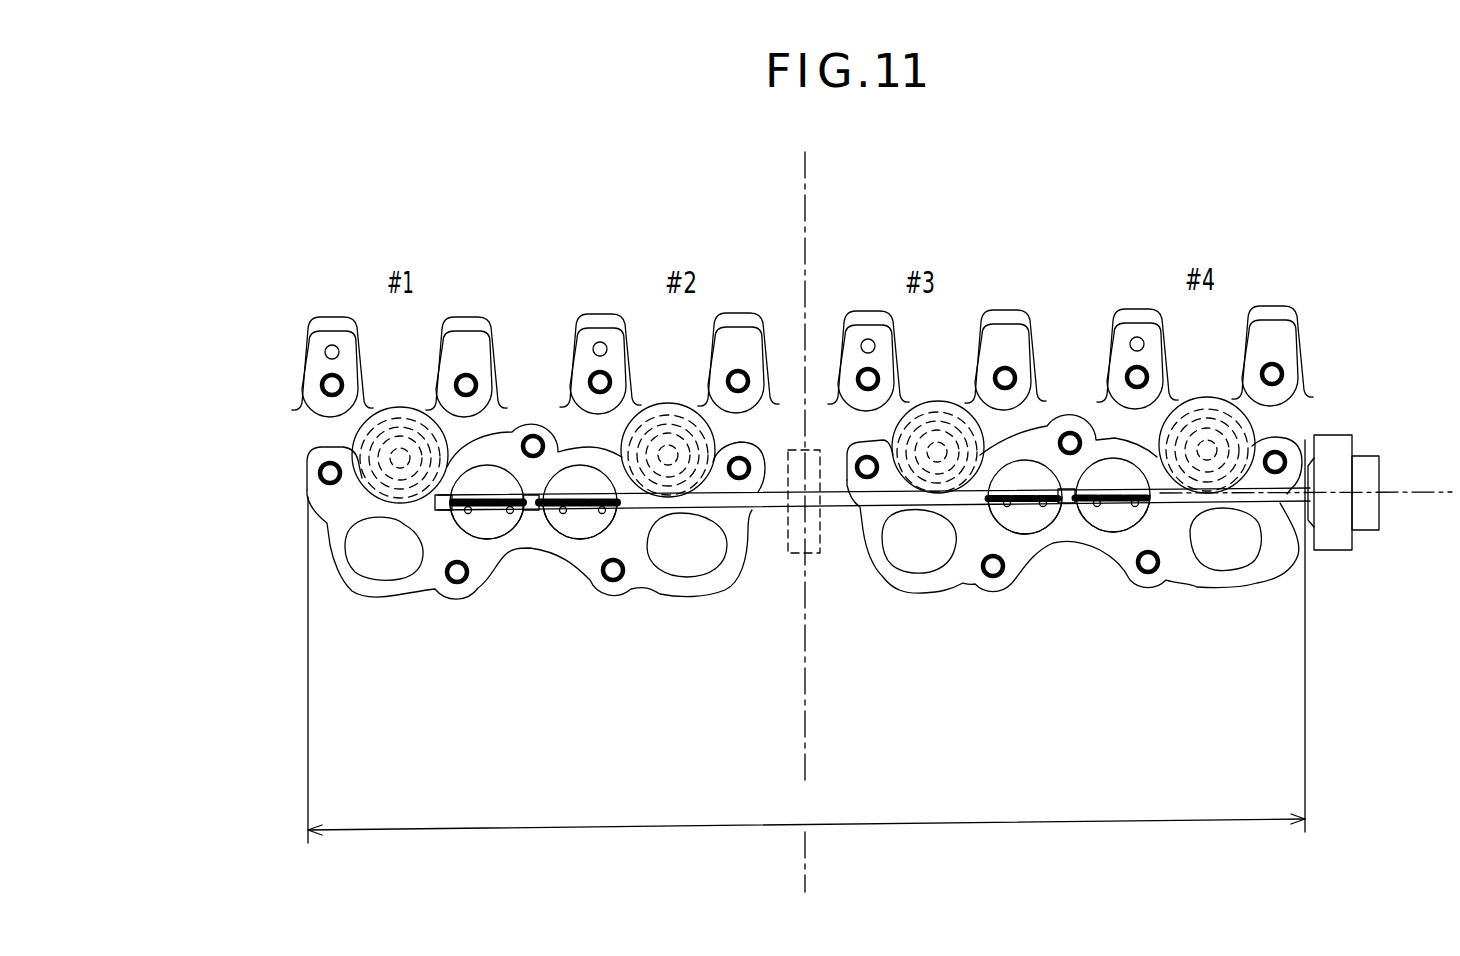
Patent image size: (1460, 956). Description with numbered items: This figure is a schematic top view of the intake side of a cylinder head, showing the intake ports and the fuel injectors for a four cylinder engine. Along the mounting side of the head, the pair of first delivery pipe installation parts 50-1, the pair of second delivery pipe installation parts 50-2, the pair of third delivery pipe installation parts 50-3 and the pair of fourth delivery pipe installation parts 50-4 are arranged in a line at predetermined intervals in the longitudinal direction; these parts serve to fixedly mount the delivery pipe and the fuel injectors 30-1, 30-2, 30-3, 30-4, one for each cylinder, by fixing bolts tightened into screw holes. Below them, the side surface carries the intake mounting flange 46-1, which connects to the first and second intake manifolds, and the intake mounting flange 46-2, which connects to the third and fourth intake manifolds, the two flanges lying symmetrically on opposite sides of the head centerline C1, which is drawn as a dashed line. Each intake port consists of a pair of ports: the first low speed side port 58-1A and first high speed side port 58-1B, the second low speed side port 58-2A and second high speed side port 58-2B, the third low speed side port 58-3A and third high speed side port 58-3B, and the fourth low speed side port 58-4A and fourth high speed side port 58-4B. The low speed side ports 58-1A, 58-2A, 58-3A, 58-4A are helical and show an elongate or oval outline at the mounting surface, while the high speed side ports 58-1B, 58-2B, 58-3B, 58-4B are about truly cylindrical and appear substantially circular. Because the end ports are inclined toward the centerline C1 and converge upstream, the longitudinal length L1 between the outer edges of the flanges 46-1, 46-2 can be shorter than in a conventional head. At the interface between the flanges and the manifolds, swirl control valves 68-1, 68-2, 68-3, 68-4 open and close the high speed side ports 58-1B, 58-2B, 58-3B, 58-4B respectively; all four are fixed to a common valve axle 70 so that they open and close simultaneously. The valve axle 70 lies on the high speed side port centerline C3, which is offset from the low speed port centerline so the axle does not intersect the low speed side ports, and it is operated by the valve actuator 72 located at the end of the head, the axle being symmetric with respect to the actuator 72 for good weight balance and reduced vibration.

The fuel injector 30-1 is at (390, 420).
The fuel injector 30-2 is at (662, 418).
The fuel injector 30-3 is at (935, 418).
The fuel injector 30-4 is at (1200, 412).
The first delivery pipe installation parts 50-1 is at (322, 340).
The second delivery pipe installation parts 50-2 is at (592, 335).
The third delivery pipe installation parts 50-3 is at (860, 340).
The fourth delivery pipe installation parts 50-4 is at (1127, 328).
The intake mounting flange 46-1 is at (1131, 589).
The intake mounting flange 46-2 is at (465, 579).
The first low speed side port 58-1A is at (393, 565).
The first high speed side port 58-1B is at (482, 530).
The second low speed side port 58-2A is at (693, 558).
The second high speed side port 58-2B is at (592, 527).
The third low speed side port 58-3A is at (912, 560).
The third high speed side port 58-3B is at (1017, 520).
The fourth low speed side port 58-4A is at (1235, 555).
The fourth high speed side port 58-4B is at (1123, 518).
The swirl control valve 68-1 is at (500, 512).
The swirl control valve 68-2 is at (580, 510).
The swirl control valve 68-3 is at (1027, 504).
The swirl control valve 68-4 is at (1107, 505).
The valve axle 70 is at (1257, 493).
The valve actuator 72 is at (803, 552).
The longitudinal length L1 is at (806, 641).
The head centerline C1 is at (808, 852).
The high speed side port centerline C3 is at (1418, 492).